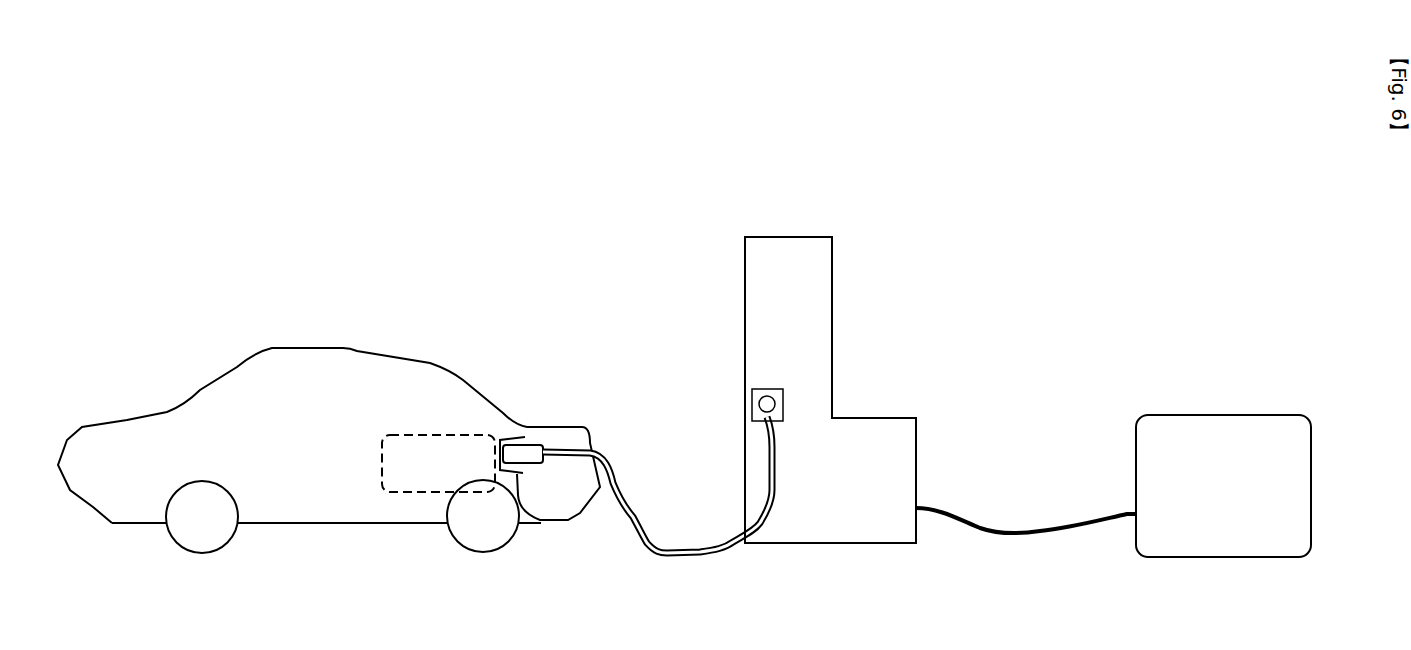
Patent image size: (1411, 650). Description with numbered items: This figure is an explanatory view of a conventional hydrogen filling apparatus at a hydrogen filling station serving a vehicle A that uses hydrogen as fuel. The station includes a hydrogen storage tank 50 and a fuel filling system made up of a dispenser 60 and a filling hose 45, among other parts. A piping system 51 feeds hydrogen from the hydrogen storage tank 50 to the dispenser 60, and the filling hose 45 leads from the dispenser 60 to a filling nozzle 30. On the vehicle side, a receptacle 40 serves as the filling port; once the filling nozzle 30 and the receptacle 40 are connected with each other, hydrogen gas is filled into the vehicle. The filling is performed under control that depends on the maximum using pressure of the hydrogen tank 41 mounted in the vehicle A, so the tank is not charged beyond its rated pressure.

The vehicle A is at (315, 348).
The filling nozzle 30 is at (535, 442).
The receptacle 40 is at (545, 520).
The hydrogen tank 41 is at (444, 433).
The filling hose 45 is at (662, 542).
The hydrogen storage tank 50 is at (1197, 415).
The piping system 51 is at (1003, 533).
The dispenser 60 is at (867, 418).